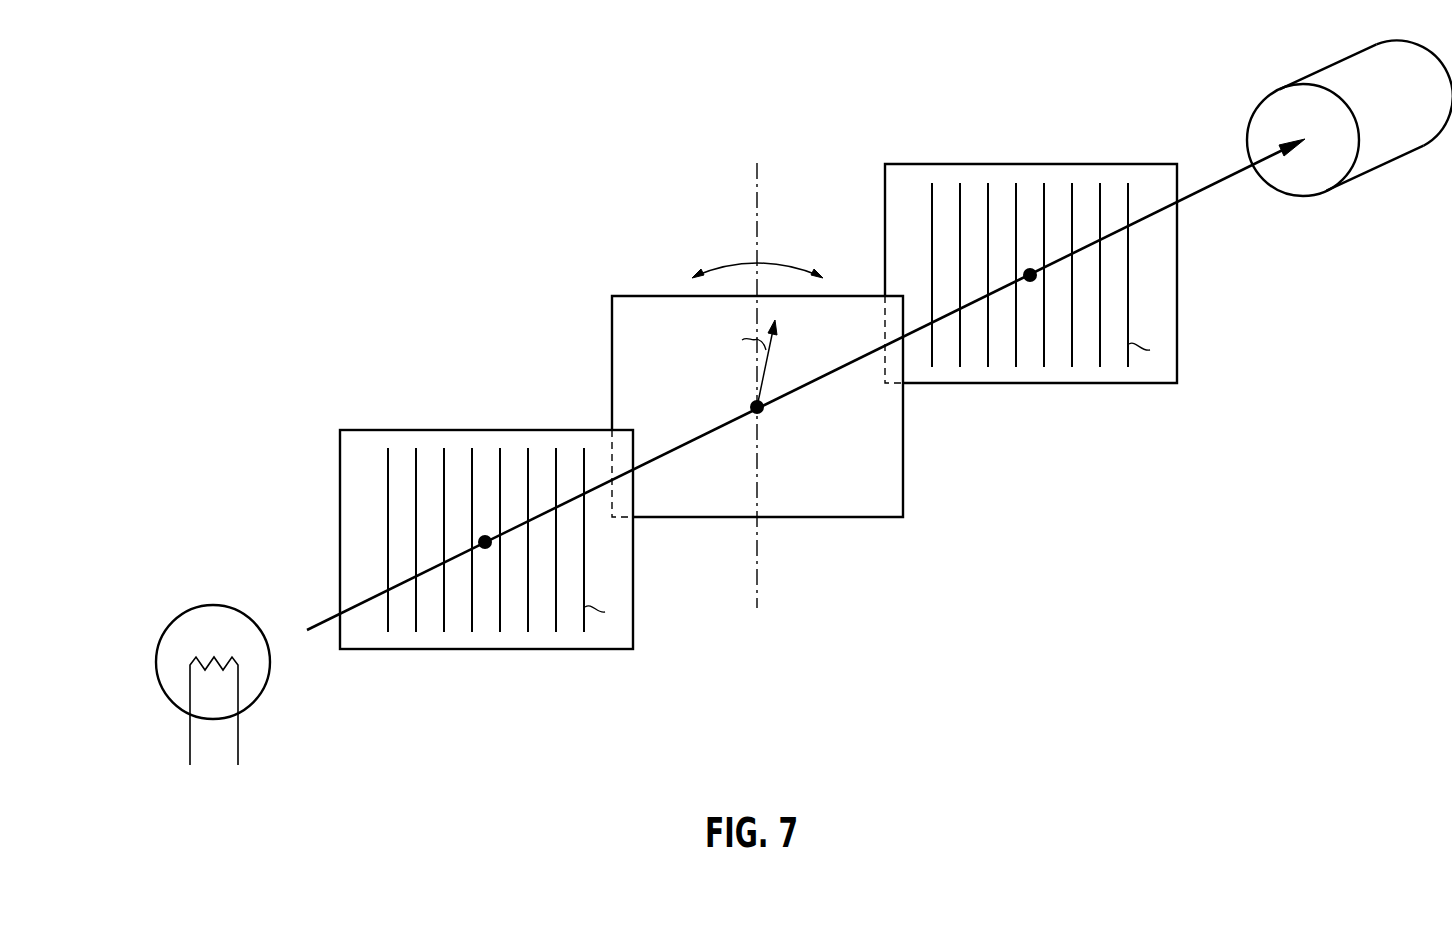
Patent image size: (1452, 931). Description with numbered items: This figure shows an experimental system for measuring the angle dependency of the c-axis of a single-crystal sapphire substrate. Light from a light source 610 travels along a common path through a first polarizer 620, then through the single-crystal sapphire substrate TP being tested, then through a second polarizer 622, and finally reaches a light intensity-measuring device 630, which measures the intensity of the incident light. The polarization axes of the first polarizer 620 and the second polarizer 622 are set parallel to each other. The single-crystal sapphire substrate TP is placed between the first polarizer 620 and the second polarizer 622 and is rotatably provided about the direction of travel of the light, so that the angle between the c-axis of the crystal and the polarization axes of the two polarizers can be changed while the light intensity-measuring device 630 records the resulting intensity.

The light source 610 is at (156, 665).
The first polarizer 620 is at (575, 651).
The second polarizer 622 is at (1110, 385).
The light intensity-measuring device 630 is at (1380, 164).
The single-crystal sapphire substrate TP is at (863, 519).